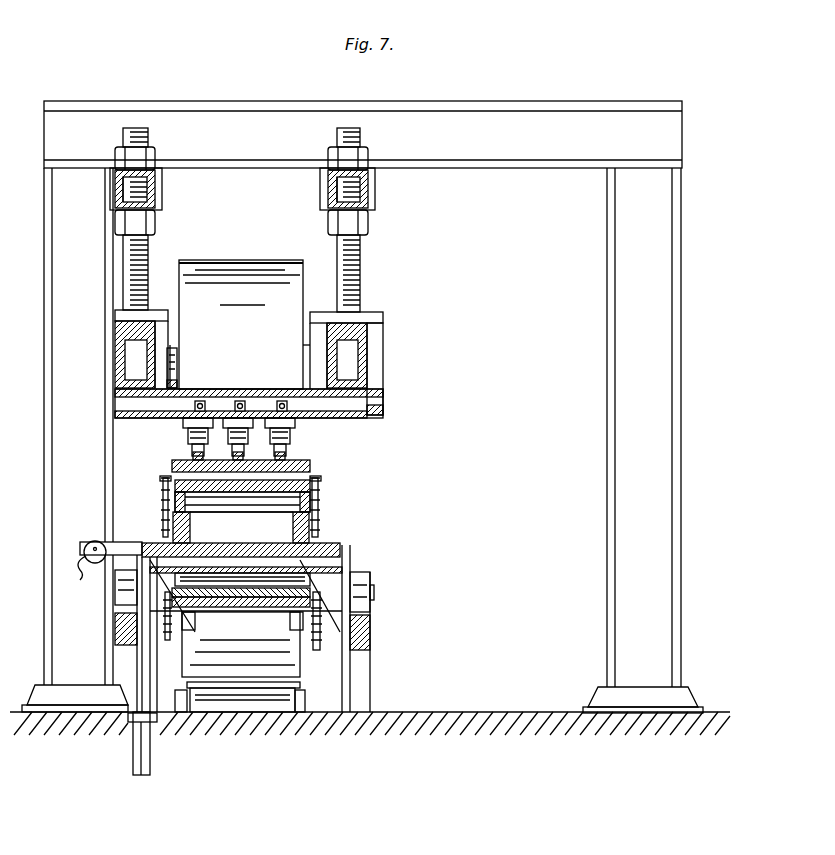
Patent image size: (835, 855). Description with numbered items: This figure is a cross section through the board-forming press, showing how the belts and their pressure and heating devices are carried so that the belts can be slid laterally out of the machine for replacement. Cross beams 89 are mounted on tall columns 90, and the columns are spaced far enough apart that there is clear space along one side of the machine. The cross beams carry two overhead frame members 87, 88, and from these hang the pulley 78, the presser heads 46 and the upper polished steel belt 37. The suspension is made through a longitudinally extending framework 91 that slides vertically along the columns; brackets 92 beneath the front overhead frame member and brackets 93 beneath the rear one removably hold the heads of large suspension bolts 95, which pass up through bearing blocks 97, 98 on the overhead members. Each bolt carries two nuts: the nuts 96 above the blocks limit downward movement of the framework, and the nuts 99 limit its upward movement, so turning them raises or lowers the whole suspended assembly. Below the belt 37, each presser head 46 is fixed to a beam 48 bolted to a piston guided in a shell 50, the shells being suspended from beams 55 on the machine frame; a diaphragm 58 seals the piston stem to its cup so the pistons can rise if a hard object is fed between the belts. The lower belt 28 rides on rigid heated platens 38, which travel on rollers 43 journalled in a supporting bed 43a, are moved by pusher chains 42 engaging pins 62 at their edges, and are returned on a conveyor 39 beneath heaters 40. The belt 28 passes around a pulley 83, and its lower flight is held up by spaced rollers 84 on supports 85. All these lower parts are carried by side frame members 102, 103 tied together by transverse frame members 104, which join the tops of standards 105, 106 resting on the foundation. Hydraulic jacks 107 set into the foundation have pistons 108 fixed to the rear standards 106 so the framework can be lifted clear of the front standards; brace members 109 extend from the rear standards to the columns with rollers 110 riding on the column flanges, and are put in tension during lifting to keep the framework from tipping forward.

The lower belt 28 is at (310, 484).
The upper polished steel belt 37 is at (240, 259).
The heated platens 38 is at (165, 488).
The conveyor 39 is at (170, 640).
The heaters 40 is at (330, 584).
The pusher chains 42 is at (168, 520).
The rollers 43 is at (262, 497).
The supporting bed 43a is at (188, 527).
The presser heads 46 is at (172, 467).
The beam 48 is at (195, 456).
The shell 50 is at (284, 425).
The beams 55 is at (190, 398).
The diaphragm 58 is at (268, 602).
The pins 62 is at (322, 488).
The pulley 78 is at (253, 356).
The pulley 83 is at (240, 663).
The spaced rollers 84 is at (253, 697).
The supports 85 is at (300, 717).
The front overhead frame member 87 is at (117, 200).
The rear overhead frame member 88 is at (376, 200).
The cross beams 89 is at (203, 118).
The columns 90 is at (92, 413).
The framework 91 is at (117, 349).
The brackets 92 is at (115, 318).
The brackets 93 is at (383, 318).
The suspension bolts 95 is at (148, 274).
The nuts 96 is at (157, 157).
The bearing block 97 is at (158, 197).
The bearing block 98 is at (323, 199).
The nuts 99 is at (156, 225).
The side frame member 102 is at (372, 634).
The side frame member 103 is at (115, 633).
The transverse frame members 104 is at (343, 553).
The front standards 105 is at (343, 679).
The rear standards 106 is at (140, 664).
The hydraulic jacks 107 is at (140, 776).
The pistons 108 is at (133, 722).
The brace members 109 is at (84, 563).
The rollers 110 is at (95, 541).